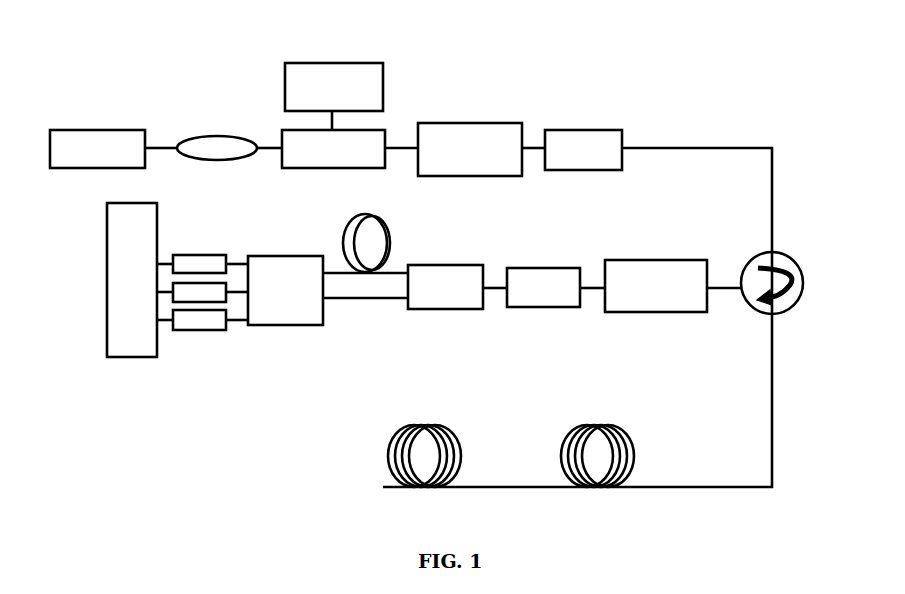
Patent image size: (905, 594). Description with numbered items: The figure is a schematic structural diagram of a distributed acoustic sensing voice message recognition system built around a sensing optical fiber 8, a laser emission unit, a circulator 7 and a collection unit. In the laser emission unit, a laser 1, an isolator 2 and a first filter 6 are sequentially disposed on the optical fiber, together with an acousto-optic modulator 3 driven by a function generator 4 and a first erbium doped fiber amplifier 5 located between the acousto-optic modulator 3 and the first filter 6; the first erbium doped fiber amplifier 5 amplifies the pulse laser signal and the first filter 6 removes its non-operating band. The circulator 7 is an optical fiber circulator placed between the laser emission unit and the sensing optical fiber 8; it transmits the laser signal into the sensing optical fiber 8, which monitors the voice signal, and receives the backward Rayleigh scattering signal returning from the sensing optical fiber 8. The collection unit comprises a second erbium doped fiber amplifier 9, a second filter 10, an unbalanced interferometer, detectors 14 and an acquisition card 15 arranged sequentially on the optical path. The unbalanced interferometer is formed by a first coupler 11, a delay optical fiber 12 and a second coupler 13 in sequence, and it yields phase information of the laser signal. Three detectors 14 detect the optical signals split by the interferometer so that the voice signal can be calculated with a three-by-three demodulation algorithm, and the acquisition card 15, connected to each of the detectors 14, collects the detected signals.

The laser 1 is at (74, 150).
The isolator 2 is at (216, 146).
The acousto-optic modulator 3 is at (350, 148).
The function generator 4 is at (317, 80).
The first erbium doped fiber amplifier 5 is at (478, 142).
The first filter 6 is at (587, 148).
The circulator 7 is at (792, 264).
The sensing optical fiber 8 is at (565, 448).
The second erbium doped fiber amplifier 9 is at (650, 282).
The second filter 10 is at (546, 285).
The first coupler 11 is at (445, 286).
The delay optical fiber 12 is at (388, 240).
The second coupler 13 is at (272, 272).
The detector 14 is at (210, 318).
The acquisition card 15 is at (137, 275).